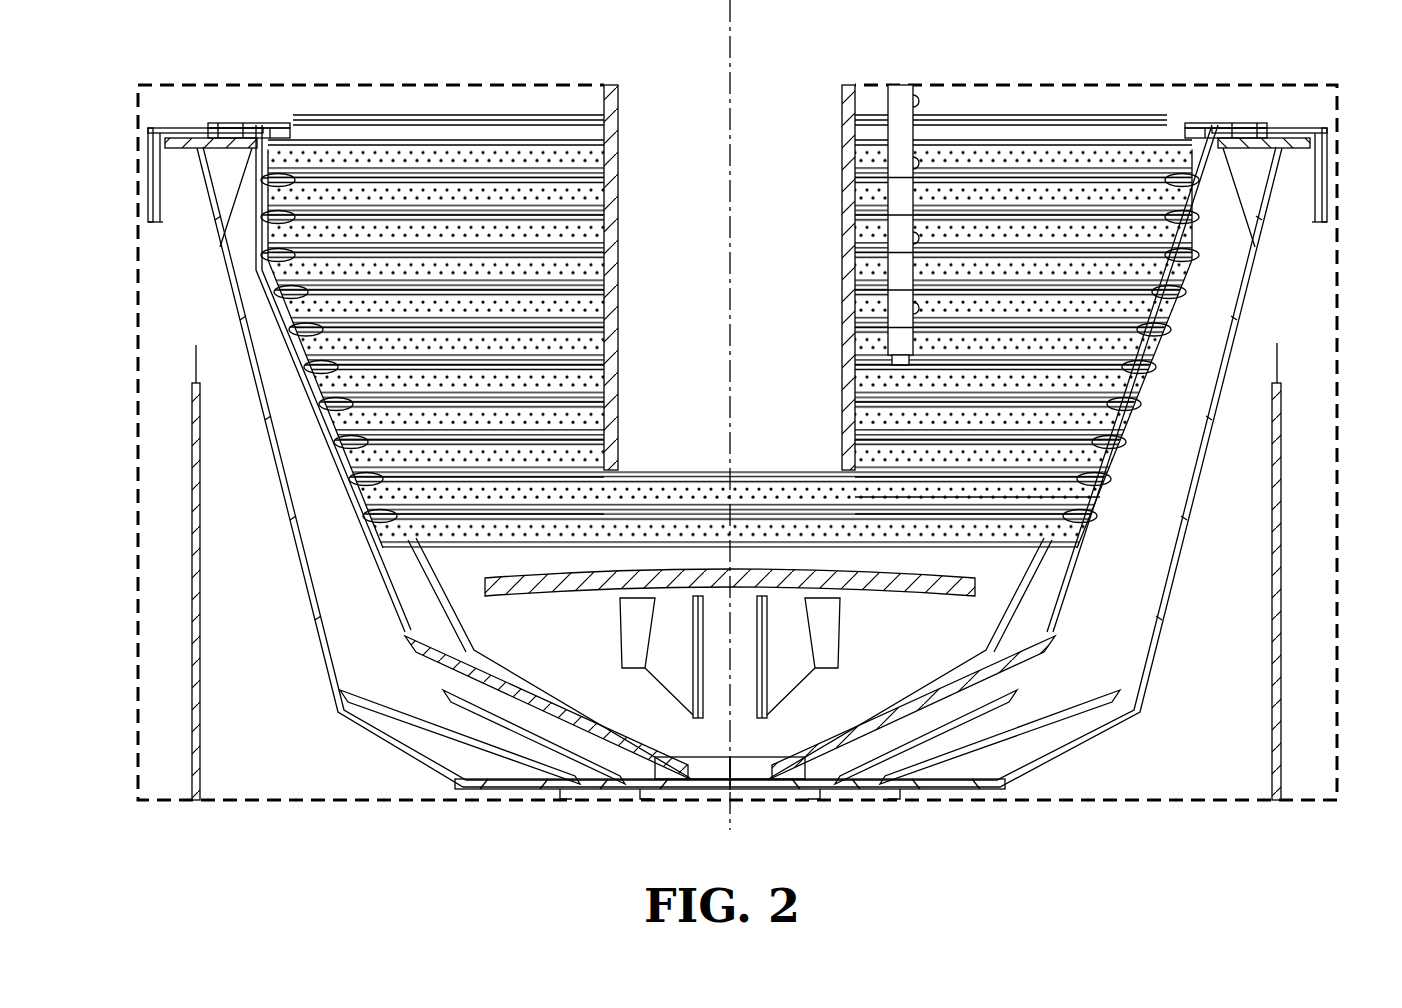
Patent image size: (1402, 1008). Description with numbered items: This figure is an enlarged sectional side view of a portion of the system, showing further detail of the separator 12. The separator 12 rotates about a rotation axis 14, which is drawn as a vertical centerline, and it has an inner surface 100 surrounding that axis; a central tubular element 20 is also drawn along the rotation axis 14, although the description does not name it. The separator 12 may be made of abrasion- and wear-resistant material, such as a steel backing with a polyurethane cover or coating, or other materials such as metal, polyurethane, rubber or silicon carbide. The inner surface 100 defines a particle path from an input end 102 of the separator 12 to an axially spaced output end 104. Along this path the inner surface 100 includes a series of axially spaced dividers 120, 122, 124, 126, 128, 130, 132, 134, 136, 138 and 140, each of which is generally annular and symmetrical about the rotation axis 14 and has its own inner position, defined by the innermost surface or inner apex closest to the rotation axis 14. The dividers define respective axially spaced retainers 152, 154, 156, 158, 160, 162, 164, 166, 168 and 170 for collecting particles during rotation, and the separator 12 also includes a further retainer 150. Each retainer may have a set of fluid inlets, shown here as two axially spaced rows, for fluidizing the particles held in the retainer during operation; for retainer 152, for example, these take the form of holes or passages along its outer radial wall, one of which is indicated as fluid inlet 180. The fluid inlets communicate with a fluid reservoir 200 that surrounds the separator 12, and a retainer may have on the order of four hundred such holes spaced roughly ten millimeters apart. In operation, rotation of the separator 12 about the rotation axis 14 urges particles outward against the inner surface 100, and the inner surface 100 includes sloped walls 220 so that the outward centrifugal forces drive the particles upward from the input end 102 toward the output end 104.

The separator 12 is at (440, 106).
The rotation axis 14 is at (738, 44).
The central tube 20 is at (846, 125).
The inner surface 100 is at (1135, 150).
The input end 102 is at (1018, 500).
The output end 104 is at (1010, 105).
The divider 120 is at (368, 525).
The divider 122 is at (354, 488).
The divider 124 is at (339, 451).
The divider 126 is at (324, 413).
The divider 128 is at (309, 376).
The divider 130 is at (294, 338).
The divider 132 is at (279, 301).
The divider 134 is at (266, 264).
The divider 136 is at (266, 226).
The divider 138 is at (266, 189).
The divider 140 is at (290, 128).
The retainer 150 is at (1092, 525).
The retainer 152 is at (1106, 488).
The retainer 154 is at (1121, 451).
The retainer 156 is at (1136, 413).
The retainer 158 is at (1151, 376).
The retainer 160 is at (1166, 338).
The retainer 162 is at (1181, 301).
The retainer 164 is at (1194, 264).
The retainer 166 is at (1194, 226).
The retainer 168 is at (1194, 189).
The retainer 170 is at (1200, 157).
The fluid inlet 180 is at (1013, 580).
The fluid reservoir 200 is at (1085, 652).
The sloped walls 220 is at (440, 592).